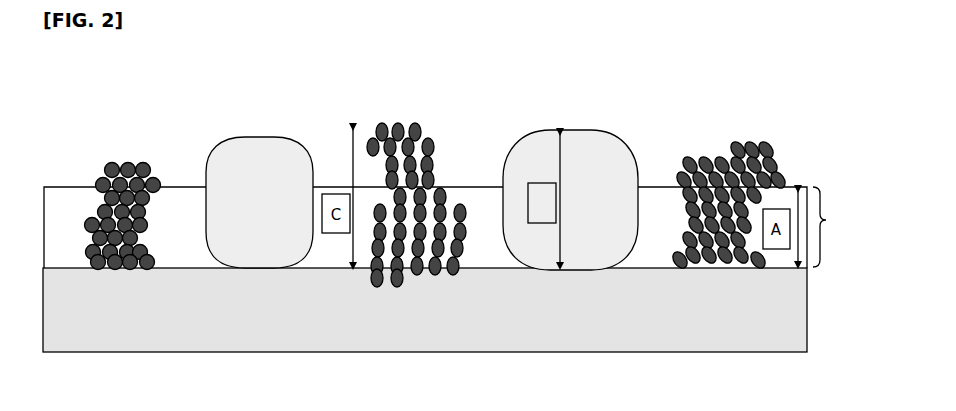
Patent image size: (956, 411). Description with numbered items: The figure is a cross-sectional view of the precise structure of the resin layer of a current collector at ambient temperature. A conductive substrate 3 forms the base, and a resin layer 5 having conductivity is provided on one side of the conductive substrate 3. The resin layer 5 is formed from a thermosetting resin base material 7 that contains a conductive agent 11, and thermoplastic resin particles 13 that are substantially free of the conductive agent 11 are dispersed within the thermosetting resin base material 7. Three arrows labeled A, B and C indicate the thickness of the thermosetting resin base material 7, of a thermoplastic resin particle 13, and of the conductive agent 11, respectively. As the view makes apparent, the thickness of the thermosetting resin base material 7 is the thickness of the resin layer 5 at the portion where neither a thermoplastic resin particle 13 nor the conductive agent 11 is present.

The conductive substrate 3 is at (293, 340).
The resin layer 5 is at (830, 227).
The thermosetting resin base material 7 is at (183, 196).
The conductive agent 11 is at (394, 121).
The thermoplastic resin particles 13 is at (575, 146).